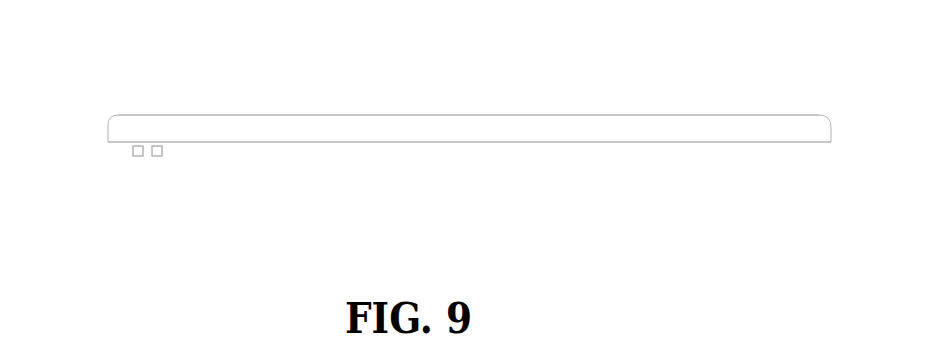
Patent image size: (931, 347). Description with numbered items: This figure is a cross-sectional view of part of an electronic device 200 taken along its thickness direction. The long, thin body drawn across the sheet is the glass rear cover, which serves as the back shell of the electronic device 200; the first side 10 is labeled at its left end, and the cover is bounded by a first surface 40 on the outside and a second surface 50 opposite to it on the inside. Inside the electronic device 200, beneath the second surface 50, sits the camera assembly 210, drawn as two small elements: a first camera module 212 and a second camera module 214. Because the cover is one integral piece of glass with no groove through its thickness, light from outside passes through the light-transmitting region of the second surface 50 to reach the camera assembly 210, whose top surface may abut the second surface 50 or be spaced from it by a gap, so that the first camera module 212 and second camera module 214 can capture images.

The electronic device 200 is at (489, 68).
The first side 10 is at (108, 127).
The first surface 40 is at (260, 115).
The second surface 50 is at (356, 143).
The camera assembly 210 is at (188, 212).
The first camera module 212 is at (136, 155).
The second camera module 214 is at (158, 156).